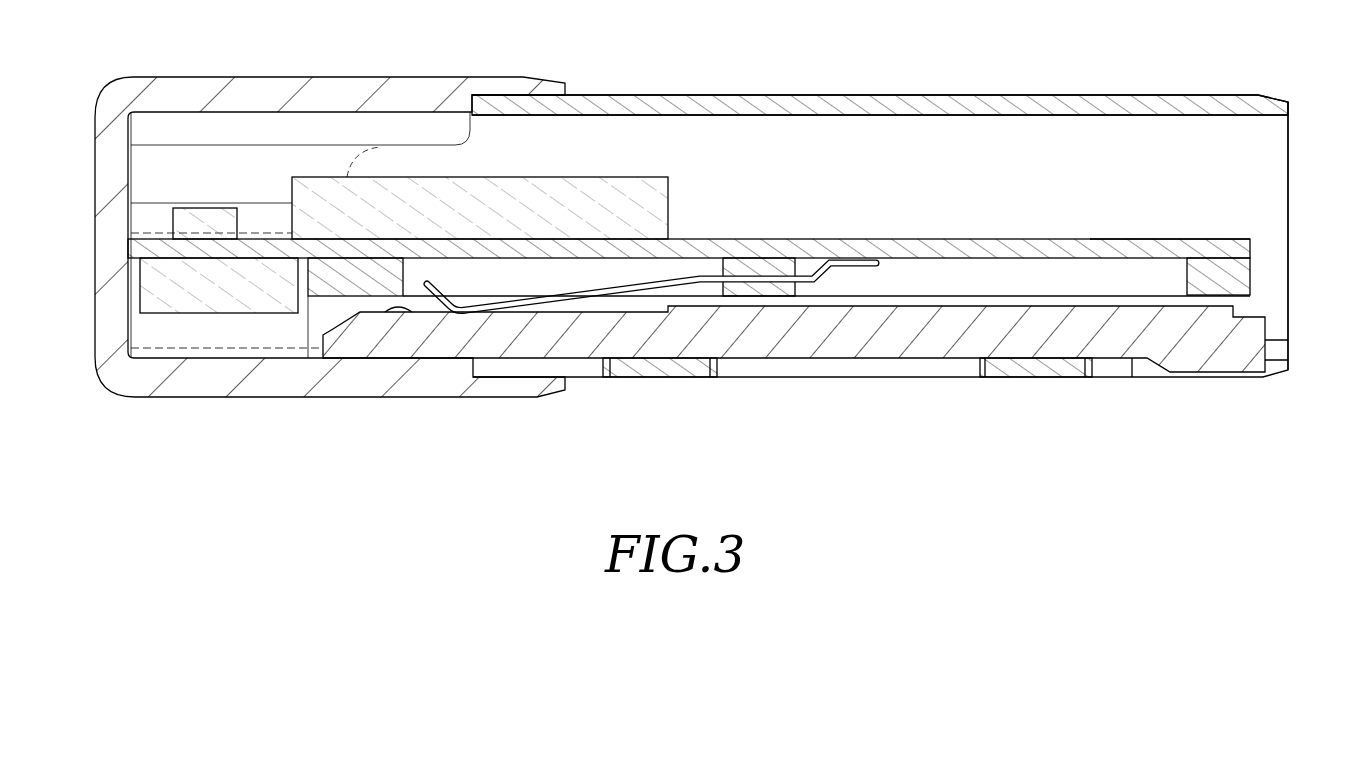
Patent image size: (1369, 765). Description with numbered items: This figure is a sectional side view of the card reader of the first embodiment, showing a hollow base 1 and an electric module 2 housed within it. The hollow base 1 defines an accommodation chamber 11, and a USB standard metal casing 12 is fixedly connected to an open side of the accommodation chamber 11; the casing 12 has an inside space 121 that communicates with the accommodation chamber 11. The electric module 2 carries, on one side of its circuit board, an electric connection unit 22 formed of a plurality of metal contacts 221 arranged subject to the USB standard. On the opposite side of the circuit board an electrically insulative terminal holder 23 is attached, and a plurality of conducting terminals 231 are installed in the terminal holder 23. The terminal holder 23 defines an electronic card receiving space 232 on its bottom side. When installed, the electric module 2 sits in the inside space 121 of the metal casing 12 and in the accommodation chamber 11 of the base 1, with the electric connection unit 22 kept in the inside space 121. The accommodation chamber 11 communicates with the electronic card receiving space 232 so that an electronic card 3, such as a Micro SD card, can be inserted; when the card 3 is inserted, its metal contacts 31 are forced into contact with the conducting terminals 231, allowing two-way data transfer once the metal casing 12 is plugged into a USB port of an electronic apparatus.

The hollow base 1 is at (293, 80).
The accommodation chamber 11 is at (202, 126).
The USB standard metal casing 12 is at (738, 97).
The inside space 121 is at (1265, 177).
The electric module 2 is at (913, 242).
The electric connection unit 22 is at (1013, 241).
The metal contacts 221 is at (1103, 240).
The electrically insulative terminal holder 23 is at (1237, 276).
The conducting terminals 231 is at (655, 278).
The electronic card receiving space 232 is at (1250, 307).
The electronic card 3 is at (794, 388).
The metal contacts 31 is at (408, 312).